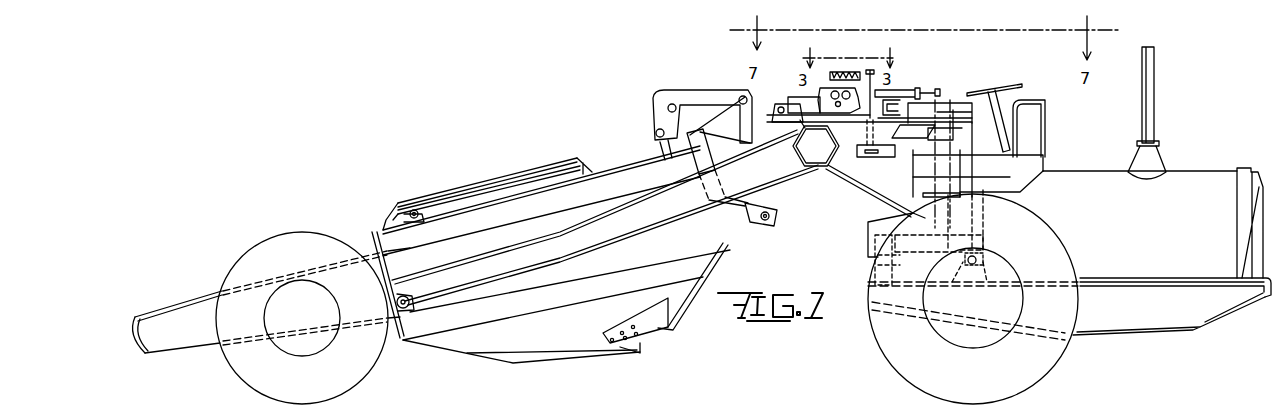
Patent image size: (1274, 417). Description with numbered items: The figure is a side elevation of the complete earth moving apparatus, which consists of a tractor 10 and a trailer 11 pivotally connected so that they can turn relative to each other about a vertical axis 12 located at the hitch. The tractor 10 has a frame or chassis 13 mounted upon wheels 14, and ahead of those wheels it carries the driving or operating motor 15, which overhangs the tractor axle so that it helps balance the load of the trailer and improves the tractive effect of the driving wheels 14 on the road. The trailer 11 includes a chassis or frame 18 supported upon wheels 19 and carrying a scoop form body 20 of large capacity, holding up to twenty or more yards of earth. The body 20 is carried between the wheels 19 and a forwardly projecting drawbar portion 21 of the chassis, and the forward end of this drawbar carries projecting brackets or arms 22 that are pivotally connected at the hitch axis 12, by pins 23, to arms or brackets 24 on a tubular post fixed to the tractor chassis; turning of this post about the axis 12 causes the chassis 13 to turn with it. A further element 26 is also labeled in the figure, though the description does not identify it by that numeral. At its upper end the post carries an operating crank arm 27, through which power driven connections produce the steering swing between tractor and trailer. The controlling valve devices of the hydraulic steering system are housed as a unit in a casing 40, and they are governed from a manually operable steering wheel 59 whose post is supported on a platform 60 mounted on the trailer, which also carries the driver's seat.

The tractor 10 is at (1218, 167).
The trailer 11 is at (508, 170).
The vertical axis 12 is at (976, 167).
The frame or chassis 13 is at (1183, 313).
The wheels 14 is at (1045, 370).
The driving or operating motor 15 is at (1168, 205).
The chassis or frame 18 is at (375, 262).
The wheels 19 is at (277, 387).
The scoop form body 20 is at (498, 340).
The drawbar portion 21 is at (860, 170).
The brackets or arms 22 is at (887, 208).
The pins 23 is at (957, 137).
The arms or brackets 24 is at (925, 140).
The hydraulic cylinder 26 is at (962, 133).
The operating crank arm 27 is at (936, 102).
The casing 40 is at (832, 105).
The steering wheel 59 is at (1010, 85).
The platform 60 is at (1033, 167).